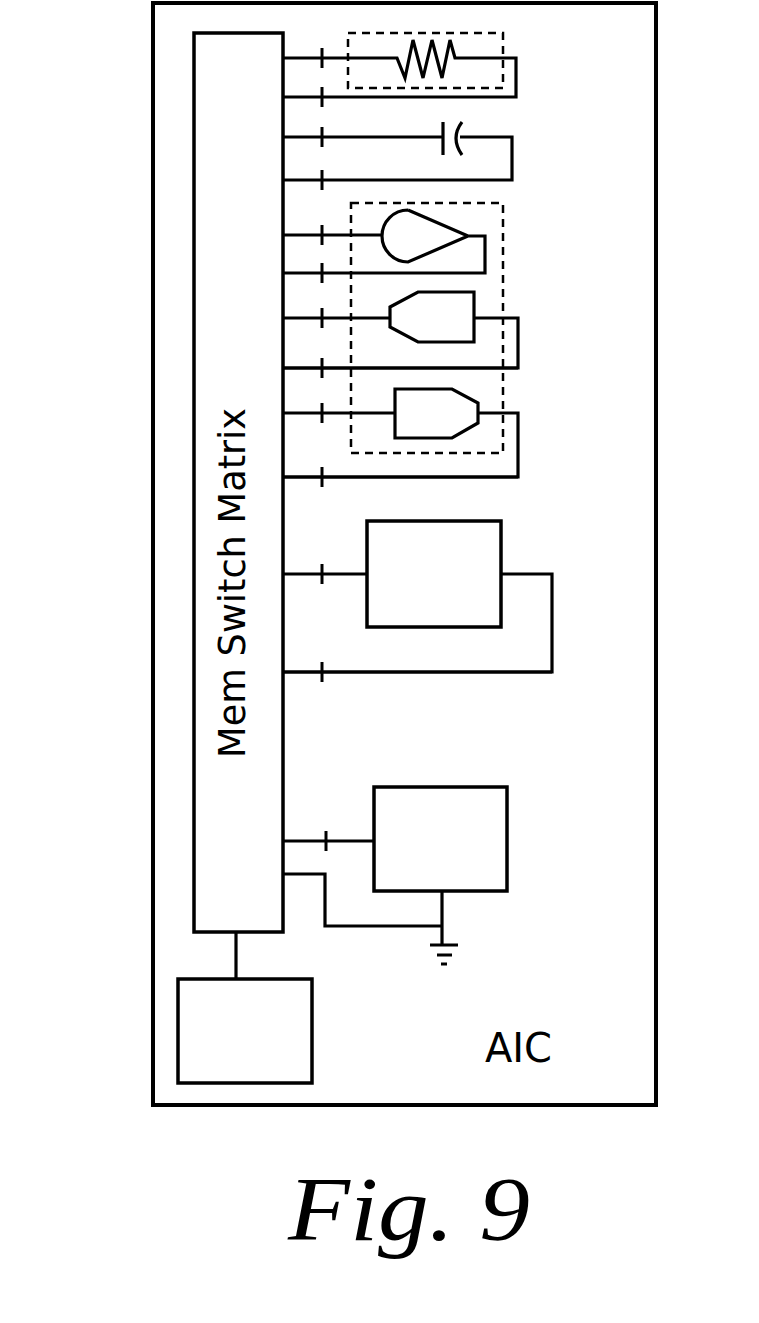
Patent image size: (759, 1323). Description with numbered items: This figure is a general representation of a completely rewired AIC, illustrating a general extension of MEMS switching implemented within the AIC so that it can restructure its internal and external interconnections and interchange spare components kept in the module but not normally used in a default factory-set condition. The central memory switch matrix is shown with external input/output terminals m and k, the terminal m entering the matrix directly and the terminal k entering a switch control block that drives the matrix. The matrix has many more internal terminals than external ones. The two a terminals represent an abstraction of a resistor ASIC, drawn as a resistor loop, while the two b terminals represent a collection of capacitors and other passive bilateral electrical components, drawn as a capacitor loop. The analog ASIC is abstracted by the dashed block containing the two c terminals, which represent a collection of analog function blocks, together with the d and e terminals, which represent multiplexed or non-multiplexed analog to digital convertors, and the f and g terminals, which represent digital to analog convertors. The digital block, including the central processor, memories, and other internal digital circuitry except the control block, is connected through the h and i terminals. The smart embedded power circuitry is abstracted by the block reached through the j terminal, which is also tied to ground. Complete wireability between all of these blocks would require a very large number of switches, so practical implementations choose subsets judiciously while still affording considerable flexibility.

The resistor terminals a is at (399, 63).
The passive component terminals b is at (397, 144).
The analog function block terminals c is at (384, 239).
The analog to digital convertor terminal d is at (400, 323).
The analog to digital convertor terminal e is at (400, 353).
The digital to analog convertor terminal f is at (400, 425).
The digital to analog convertor terminal g is at (400, 459).
The digital block terminal h is at (417, 596).
The digital block terminal i is at (417, 657).
The power circuitry terminal j is at (395, 875).
The external I/O terminals k is at (55, 1035).
The external I/O terminals m is at (93, 502).